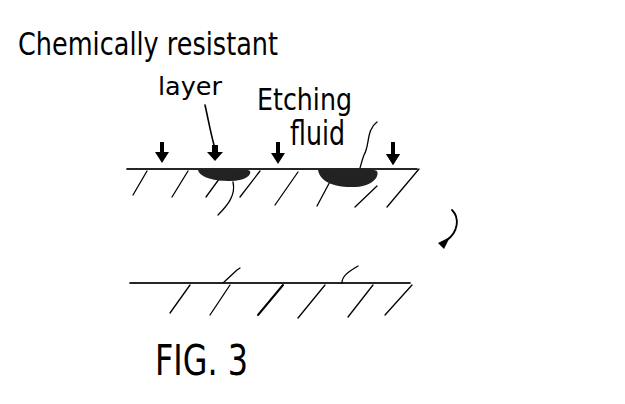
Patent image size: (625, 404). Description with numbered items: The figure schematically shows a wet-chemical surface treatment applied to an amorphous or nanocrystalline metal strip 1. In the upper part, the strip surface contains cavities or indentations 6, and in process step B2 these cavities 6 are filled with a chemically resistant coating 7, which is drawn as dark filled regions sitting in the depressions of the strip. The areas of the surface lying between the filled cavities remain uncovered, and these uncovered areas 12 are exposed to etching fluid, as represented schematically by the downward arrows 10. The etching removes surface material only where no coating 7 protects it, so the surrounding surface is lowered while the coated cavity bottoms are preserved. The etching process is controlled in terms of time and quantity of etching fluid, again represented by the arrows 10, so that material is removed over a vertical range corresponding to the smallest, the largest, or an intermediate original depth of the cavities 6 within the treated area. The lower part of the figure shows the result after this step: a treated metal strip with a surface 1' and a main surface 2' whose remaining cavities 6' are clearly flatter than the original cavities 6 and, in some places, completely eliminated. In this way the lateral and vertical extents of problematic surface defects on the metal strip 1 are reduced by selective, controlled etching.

The uncovered areas 12 is at (144, 169).
The metal strip 1 is at (245, 184).
The arrows 10 is at (159, 148).
The chemically resistant coating 7 is at (395, 133).
The cavities 6 is at (340, 189).
The surface 2' is at (262, 279).
The surface 1' is at (246, 296).
The cavities 6' is at (300, 266).
The filling of cavities with a chemically resistant coating B2 is at (463, 229).